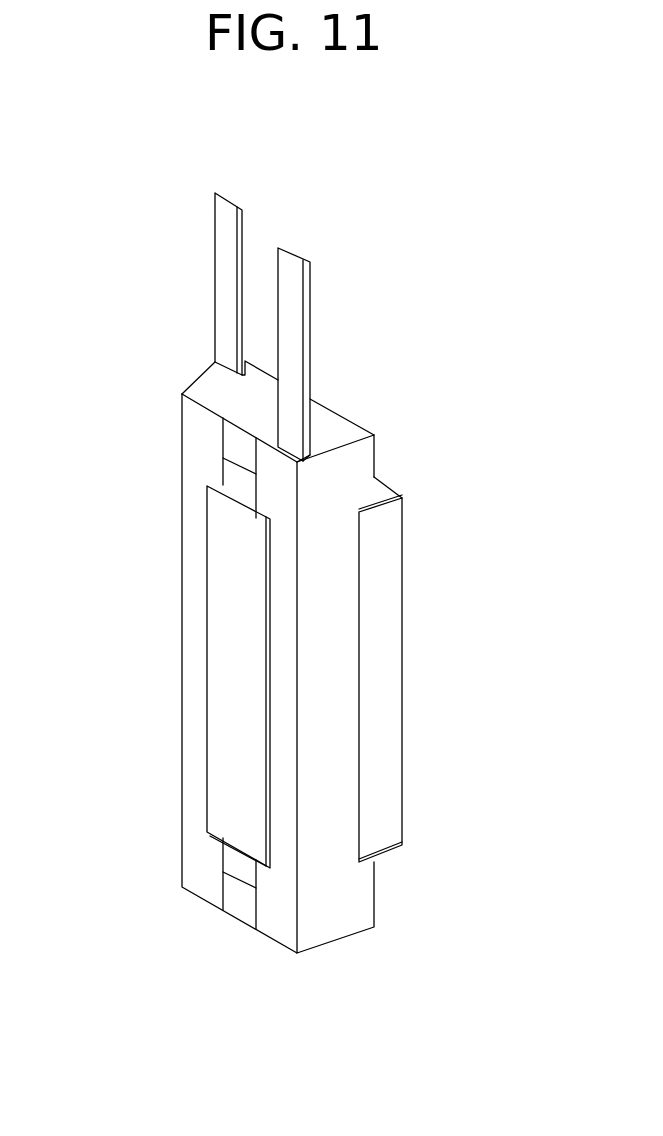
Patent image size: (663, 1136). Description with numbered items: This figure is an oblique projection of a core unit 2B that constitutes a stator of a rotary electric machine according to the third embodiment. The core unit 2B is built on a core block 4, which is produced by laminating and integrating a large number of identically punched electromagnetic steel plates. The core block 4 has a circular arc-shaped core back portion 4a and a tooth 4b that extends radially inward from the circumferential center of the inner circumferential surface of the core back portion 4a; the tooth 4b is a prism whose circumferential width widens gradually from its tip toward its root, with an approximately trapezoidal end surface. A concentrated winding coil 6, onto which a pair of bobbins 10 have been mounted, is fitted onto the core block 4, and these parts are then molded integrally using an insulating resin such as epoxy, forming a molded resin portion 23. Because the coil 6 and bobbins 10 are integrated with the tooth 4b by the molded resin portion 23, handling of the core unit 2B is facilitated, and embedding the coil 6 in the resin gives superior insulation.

The core unit 2B is at (103, 102).
The core block 4 is at (403, 538).
The core back portion 4a is at (387, 615).
The tooth 4b is at (220, 622).
The concentrated winding coil 6 is at (212, 318).
The bobbin 10 is at (225, 476).
The molded resin portion 23 is at (195, 386).